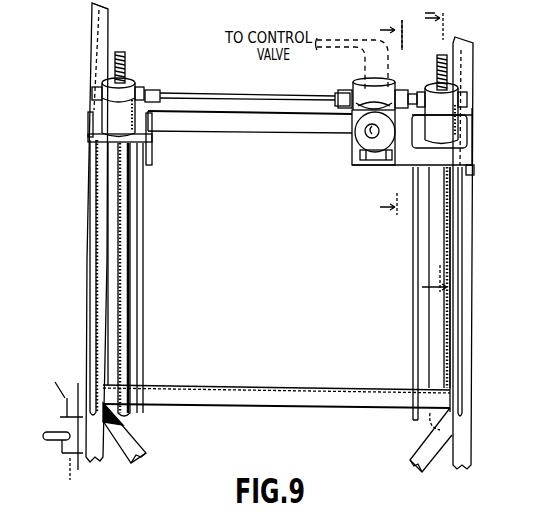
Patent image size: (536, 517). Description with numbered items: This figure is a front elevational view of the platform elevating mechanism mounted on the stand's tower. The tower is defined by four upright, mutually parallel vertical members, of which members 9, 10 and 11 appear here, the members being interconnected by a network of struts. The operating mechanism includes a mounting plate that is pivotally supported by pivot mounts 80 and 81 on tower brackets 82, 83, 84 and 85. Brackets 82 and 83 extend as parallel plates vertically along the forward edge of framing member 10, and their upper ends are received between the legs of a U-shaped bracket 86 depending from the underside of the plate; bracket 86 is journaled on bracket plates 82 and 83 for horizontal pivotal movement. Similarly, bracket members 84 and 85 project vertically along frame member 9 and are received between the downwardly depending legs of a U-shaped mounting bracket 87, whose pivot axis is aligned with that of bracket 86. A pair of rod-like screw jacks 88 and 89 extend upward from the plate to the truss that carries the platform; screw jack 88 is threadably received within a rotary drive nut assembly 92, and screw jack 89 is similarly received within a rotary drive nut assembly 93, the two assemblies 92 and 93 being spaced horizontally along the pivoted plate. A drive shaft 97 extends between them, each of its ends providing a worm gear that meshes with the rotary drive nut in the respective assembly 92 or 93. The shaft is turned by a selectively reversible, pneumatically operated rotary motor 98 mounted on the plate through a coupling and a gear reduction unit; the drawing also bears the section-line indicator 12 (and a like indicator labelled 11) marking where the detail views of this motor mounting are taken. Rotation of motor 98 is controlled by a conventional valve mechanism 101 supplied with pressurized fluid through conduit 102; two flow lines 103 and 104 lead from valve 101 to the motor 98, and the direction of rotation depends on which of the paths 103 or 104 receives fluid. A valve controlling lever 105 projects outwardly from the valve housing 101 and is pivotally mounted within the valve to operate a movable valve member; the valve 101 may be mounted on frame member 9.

The upright vertical member 9 is at (98, 448).
The upright vertical member 10 is at (460, 445).
The upright vertical member 11 is at (433, 146).
The section line 12 is at (390, 114).
The pivot mount 80 is at (473, 147).
The pivot mount 81 is at (88, 134).
The tower bracket 82 is at (463, 242).
The tower bracket 83 is at (417, 243).
The bracket member 84 is at (138, 245).
The bracket member 85 is at (93, 215).
The U-shaped bracket 86 is at (474, 171).
The U-shaped mounting bracket 87 is at (150, 163).
The screw jack 88 is at (125, 58).
The screw jack 89 is at (440, 80).
The rotary drive nut assembly 92 is at (120, 123).
The rotary drive nut assembly 93 is at (450, 122).
The drive shaft 97 is at (245, 94).
The rotary motor 98 is at (371, 122).
The valve mechanism 101 is at (78, 460).
The conduit 102 is at (72, 473).
The flow line 103 is at (330, 40).
The flow line 104 is at (342, 47).
The valve controlling lever 105 is at (65, 448).